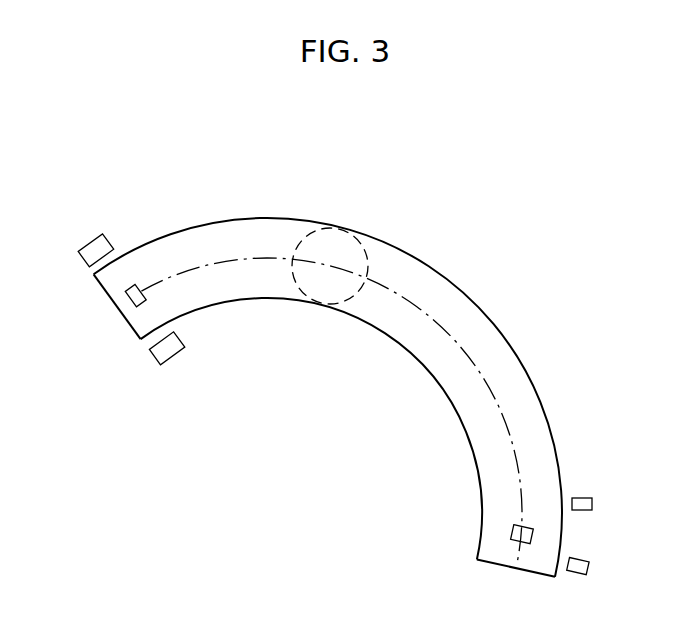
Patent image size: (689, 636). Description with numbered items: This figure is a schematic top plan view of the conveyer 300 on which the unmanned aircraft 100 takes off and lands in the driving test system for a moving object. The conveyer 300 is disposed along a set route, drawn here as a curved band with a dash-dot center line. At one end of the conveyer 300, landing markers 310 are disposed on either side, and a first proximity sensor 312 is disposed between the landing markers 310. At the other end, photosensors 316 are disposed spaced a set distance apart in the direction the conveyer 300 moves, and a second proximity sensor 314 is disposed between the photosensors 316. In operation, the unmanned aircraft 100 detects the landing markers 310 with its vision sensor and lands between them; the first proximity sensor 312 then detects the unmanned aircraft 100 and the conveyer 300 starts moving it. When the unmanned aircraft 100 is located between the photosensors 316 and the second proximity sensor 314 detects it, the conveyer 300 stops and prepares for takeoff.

The unmanned aircraft 100 is at (350, 242).
The conveyer 300 is at (425, 272).
The landing markers 310 is at (87, 254).
The first proximity sensor 312 is at (128, 297).
The second proximity sensor 314 is at (513, 535).
The photosensors 316 is at (592, 504).